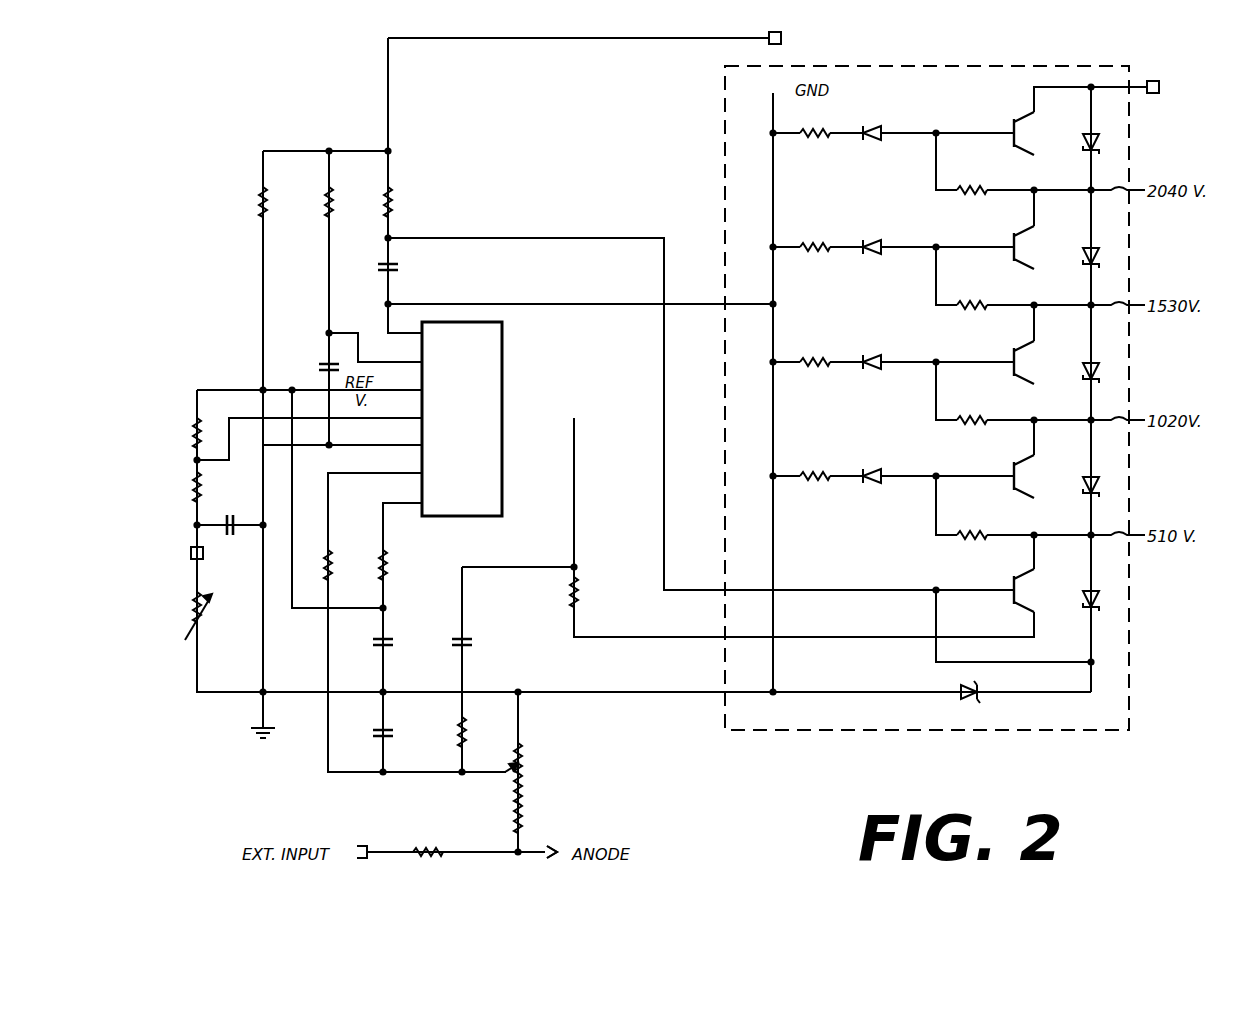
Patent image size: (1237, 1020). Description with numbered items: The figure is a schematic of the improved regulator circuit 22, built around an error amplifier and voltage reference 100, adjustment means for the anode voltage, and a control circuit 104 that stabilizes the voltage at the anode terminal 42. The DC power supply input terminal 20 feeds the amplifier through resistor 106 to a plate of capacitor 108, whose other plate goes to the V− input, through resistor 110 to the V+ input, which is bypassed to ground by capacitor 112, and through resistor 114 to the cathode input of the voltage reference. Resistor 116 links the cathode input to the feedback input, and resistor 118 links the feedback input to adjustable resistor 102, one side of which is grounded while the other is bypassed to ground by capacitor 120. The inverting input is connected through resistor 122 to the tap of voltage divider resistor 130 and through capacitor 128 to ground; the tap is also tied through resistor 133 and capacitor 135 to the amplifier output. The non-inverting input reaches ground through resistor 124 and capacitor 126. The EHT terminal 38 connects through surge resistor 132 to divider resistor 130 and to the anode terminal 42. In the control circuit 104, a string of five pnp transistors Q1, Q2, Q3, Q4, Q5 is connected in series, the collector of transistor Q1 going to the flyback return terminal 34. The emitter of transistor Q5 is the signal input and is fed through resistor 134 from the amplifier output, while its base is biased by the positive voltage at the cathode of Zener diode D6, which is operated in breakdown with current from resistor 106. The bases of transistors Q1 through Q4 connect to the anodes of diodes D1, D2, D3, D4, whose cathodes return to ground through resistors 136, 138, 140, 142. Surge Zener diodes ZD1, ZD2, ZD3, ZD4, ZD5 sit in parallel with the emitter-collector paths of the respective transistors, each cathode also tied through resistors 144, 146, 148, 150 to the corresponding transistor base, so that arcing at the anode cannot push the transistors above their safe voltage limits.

The DC power supply input terminal 20 is at (782, 36).
The regulator circuit 22 is at (341, 81).
The flyback return terminal 34 is at (1160, 82).
The EHT terminal 38 is at (360, 846).
The anode terminal 42 is at (537, 852).
The error amplifier and voltage reference 100 is at (502, 345).
The adjustable resistor 102 is at (176, 625).
The control circuit 104 is at (849, 733).
The resistor 106 is at (388, 198).
The capacitor 108 is at (378, 266).
The resistor 110 is at (329, 198).
The capacitor 112 is at (318, 361).
The resistor 114 is at (263, 198).
The resistor 116 is at (188, 431).
The resistor 118 is at (188, 491).
The capacitor 120 is at (238, 518).
The resistor 122 is at (348, 554).
The resistor 124 is at (387, 560).
The capacitor 126 is at (394, 646).
The capacitor 128 is at (388, 728).
The voltage divider resistor 130 is at (526, 760).
The surge resistor 132 is at (428, 848).
The resistor 133 is at (458, 736).
The resistor 134 is at (580, 590).
The capacitor 135 is at (473, 646).
The resistor 136 is at (808, 128).
The resistor 138 is at (808, 242).
The resistor 140 is at (808, 357).
The resistor 142 is at (808, 471).
The resistor 144 is at (964, 186).
The resistor 146 is at (964, 301).
The resistor 148 is at (964, 416).
The resistor 150 is at (964, 531).
The diode D1 is at (872, 126).
The diode D2 is at (872, 240).
The diode D3 is at (872, 355).
The diode D4 is at (872, 469).
The Zener diode D6 is at (974, 688).
The pnp transistor Q1 is at (1030, 133).
The pnp transistor Q2 is at (1030, 247).
The pnp transistor Q3 is at (1030, 362).
The pnp transistor Q4 is at (1030, 476).
The pnp transistor Q5 is at (1030, 590).
The surge Zener diode ZD1 is at (1079, 152).
The surge Zener diode ZD2 is at (1076, 264).
The surge Zener diode ZD3 is at (1076, 378).
The surge Zener diode ZD4 is at (1076, 494).
The surge Zener diode ZD5 is at (1075, 608).